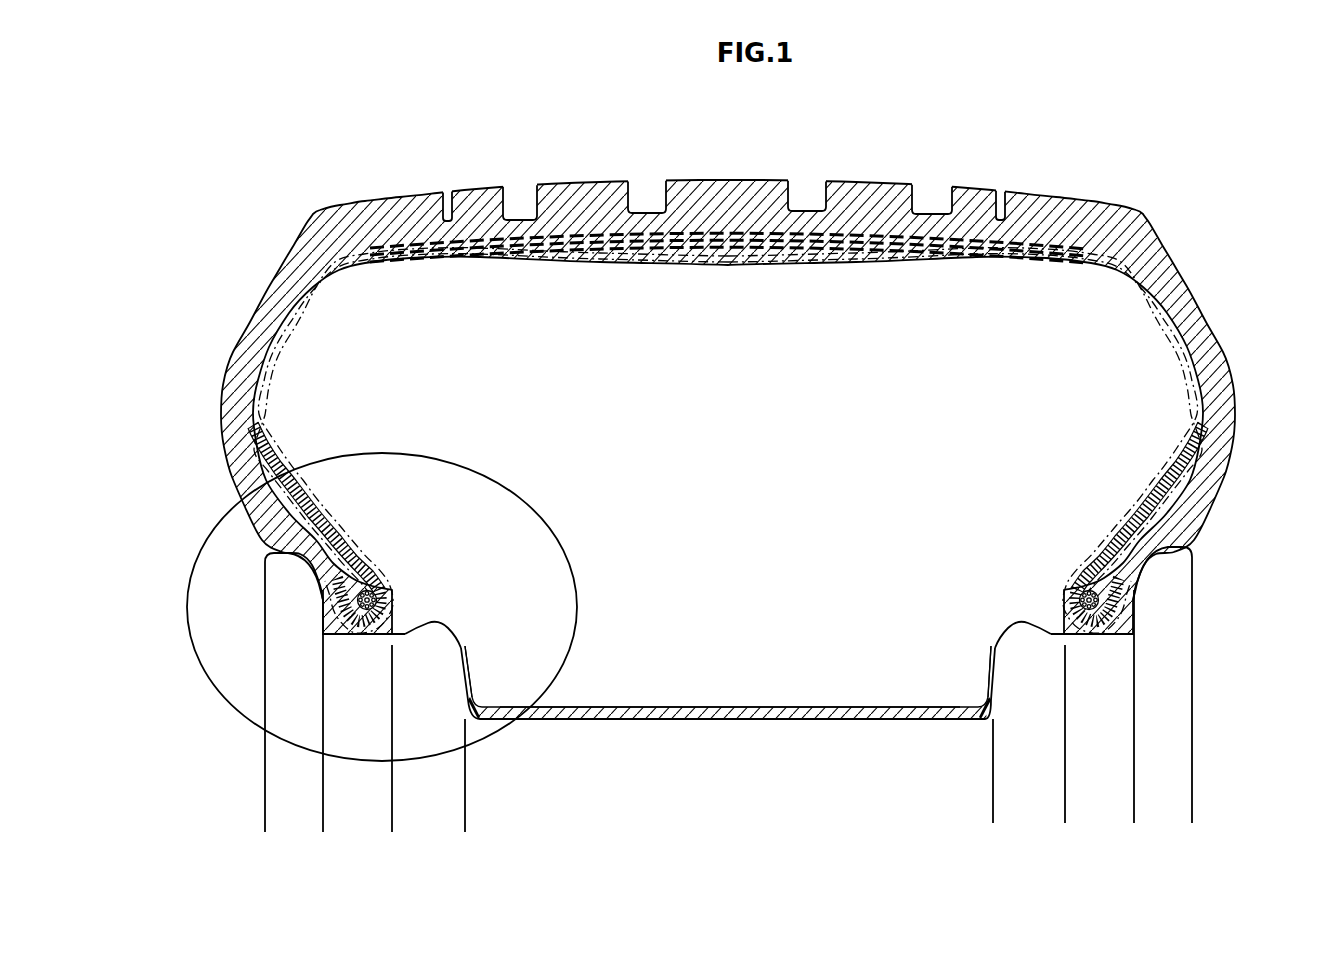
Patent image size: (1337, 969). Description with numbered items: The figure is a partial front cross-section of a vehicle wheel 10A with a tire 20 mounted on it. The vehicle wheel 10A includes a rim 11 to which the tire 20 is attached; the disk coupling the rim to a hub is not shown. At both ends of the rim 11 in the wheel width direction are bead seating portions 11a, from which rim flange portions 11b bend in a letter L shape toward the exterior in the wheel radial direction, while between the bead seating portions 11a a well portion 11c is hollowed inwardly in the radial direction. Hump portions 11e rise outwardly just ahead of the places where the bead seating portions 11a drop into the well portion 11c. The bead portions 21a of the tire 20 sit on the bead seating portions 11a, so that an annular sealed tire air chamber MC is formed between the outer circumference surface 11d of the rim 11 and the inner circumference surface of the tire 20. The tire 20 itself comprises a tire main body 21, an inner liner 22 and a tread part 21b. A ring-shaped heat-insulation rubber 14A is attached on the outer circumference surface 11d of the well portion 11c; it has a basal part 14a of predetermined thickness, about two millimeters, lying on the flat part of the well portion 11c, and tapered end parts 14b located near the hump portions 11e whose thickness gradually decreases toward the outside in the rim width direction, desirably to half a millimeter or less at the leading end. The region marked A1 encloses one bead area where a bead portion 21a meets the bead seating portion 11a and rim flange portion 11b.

The vehicle wheel 10A is at (752, 472).
The rim 11 is at (734, 707).
The bead seating portion 11a is at (340, 637).
The rim flange portion 11b is at (290, 594).
The well portion 11c is at (848, 676).
The outer circumference surface 11d is at (746, 762).
The hump portion 11e is at (434, 628).
The heat-insulation rubber 14A is at (757, 703).
The basal part 14a is at (687, 704).
The end part 14b is at (467, 657).
The tire 20 is at (730, 363).
The tire main body 21 is at (692, 167).
The bead portion 21a is at (388, 592).
The tread part 21b is at (584, 183).
The inner liner 22 is at (926, 270).
The bead region A1 is at (579, 601).
The tire air chamber MC is at (743, 397).